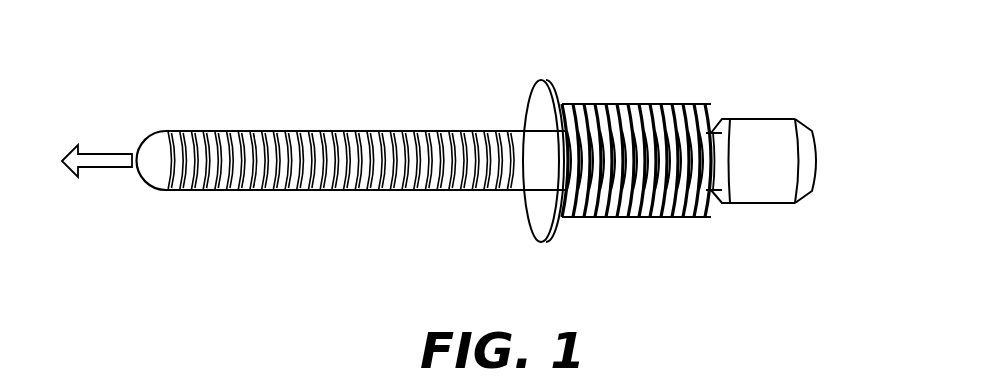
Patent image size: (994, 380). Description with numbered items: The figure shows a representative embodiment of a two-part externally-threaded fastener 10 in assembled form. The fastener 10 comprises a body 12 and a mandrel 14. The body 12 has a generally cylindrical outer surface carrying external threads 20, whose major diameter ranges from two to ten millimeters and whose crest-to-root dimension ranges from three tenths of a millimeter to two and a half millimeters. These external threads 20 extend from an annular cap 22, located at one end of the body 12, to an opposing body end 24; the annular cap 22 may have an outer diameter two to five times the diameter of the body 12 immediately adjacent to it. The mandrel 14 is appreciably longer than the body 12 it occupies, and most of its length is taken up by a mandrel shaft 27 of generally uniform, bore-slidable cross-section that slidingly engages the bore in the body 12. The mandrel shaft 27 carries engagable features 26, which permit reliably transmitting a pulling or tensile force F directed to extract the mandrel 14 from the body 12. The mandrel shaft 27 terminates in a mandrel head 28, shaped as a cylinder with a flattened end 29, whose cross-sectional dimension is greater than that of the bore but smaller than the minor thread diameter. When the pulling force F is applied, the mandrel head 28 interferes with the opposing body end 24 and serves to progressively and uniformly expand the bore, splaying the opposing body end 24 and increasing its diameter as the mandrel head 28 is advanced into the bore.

The fastener 10 is at (693, 72).
The body 12 is at (652, 167).
The mandrel 14 is at (315, 130).
The external threads 20 is at (673, 165).
The annular cap 22 is at (525, 107).
The opposing body end 24 is at (713, 143).
The engagable features 26 is at (372, 192).
The mandrel shaft 27 is at (397, 130).
The mandrel head 28 is at (763, 140).
The flattened end 29 is at (818, 157).